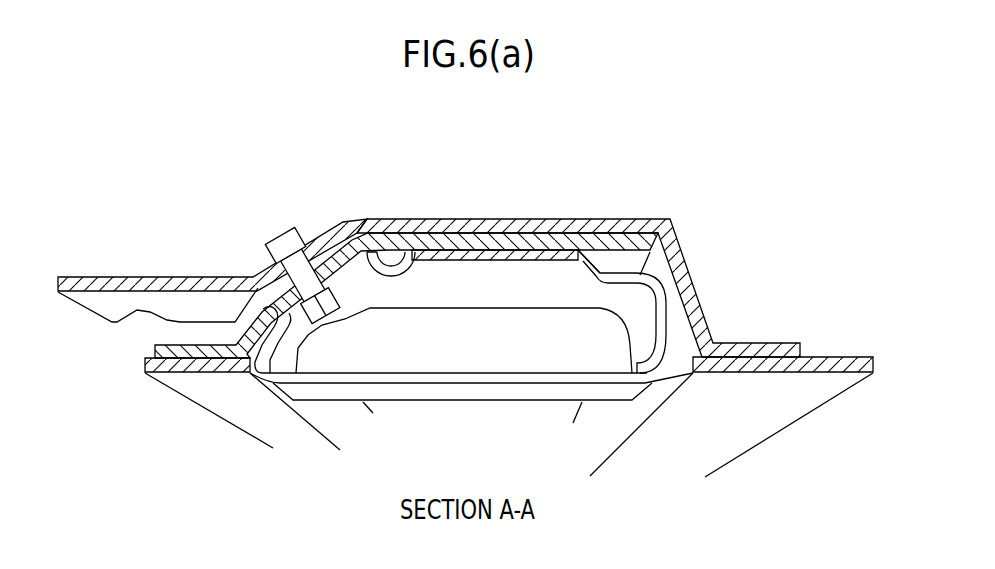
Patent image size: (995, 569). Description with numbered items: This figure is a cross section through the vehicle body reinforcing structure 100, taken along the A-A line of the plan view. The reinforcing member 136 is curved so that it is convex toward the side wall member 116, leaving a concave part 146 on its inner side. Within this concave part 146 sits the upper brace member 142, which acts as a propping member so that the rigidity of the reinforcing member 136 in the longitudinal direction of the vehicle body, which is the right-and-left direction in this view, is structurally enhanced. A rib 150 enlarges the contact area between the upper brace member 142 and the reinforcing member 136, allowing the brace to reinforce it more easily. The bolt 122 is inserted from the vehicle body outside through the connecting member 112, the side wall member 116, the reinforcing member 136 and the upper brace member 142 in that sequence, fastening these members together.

The vehicle body reinforcing structure 100 is at (252, 157).
The connecting member 112 is at (150, 277).
The side wall member 116 is at (360, 217).
The bolt 122 is at (282, 240).
The reinforcing member 136 is at (745, 427).
The upper brace member 142 is at (613, 393).
The concave part 146 is at (610, 429).
The rib 150 is at (580, 290).